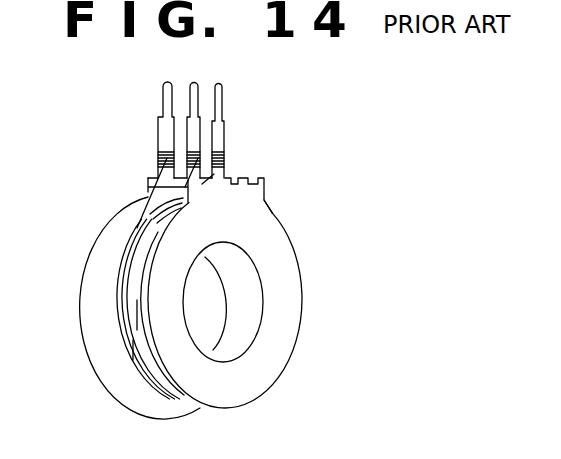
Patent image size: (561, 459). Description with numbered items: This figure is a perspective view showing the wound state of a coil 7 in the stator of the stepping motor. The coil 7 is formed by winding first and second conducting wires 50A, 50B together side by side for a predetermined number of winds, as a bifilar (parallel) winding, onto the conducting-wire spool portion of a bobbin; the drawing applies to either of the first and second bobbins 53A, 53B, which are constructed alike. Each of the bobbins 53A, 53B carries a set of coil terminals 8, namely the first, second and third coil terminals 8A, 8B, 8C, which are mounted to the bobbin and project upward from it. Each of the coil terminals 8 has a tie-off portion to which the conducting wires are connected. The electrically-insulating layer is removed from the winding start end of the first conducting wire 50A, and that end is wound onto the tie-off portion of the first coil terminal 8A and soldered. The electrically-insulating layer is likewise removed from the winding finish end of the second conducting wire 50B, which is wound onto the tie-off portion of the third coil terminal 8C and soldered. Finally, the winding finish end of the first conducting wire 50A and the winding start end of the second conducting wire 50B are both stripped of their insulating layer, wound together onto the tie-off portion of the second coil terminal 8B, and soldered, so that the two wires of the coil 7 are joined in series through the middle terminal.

The coil 7 is at (139, 261).
The coil terminal 8 is at (143, 135).
The first coil terminal 8A is at (160, 100).
The second coil terminal 8B is at (198, 109).
The third coil terminal 8C is at (226, 134).
The first conducting wire 50A is at (155, 193).
The second conducting wire 50B is at (215, 175).
The first bobbin 53A is at (285, 222).
The second bobbin 53B is at (268, 206).